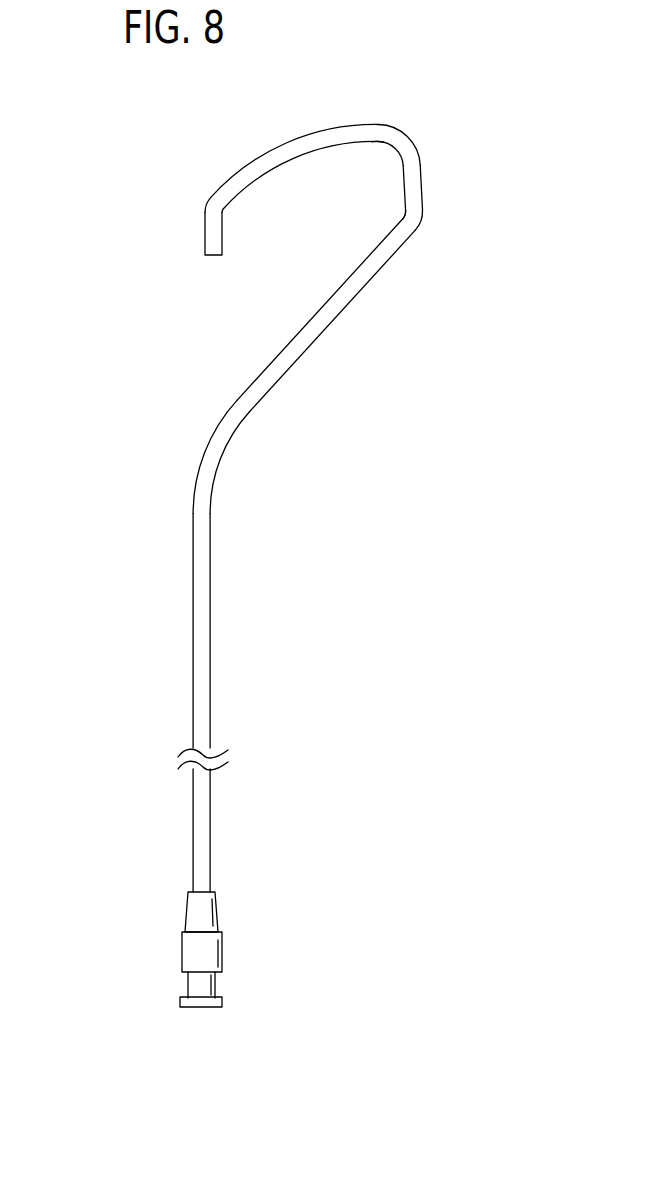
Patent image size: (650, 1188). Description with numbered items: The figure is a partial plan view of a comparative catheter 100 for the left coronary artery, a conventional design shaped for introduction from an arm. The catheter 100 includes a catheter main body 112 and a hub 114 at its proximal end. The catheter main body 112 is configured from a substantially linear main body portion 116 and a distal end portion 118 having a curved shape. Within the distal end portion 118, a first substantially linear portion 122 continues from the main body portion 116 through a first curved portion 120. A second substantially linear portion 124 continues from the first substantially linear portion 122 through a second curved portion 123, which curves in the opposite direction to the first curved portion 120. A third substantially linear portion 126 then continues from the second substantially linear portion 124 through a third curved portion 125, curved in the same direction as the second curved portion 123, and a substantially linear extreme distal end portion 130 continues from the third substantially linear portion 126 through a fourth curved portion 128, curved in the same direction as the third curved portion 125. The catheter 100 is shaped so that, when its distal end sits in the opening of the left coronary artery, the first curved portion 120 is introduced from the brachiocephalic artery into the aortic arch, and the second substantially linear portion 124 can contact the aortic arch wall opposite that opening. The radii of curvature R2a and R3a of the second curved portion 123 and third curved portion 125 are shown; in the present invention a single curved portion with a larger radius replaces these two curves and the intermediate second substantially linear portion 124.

The catheter for the left coronary artery 100 is at (402, 47).
The catheter main body 112 is at (233, 609).
The hub 114 is at (207, 918).
The main body portion 116 is at (107, 892).
The distal end portion 118 is at (107, 490).
The first curved portion 120 is at (206, 452).
The first substantially linear portion 122 is at (415, 247).
The second curved portion 123 is at (421, 221).
The second substantially linear portion 124 is at (404, 134).
The third curved portion 125 is at (391, 132).
The third substantially linear portion 126 is at (328, 118).
The fourth curved portion 128 is at (214, 201).
The extreme distal end portion 130 is at (196, 213).
The radius of curvature of the second curved portion R2a is at (392, 222).
The radius of curvature of the third curved portion R3a is at (378, 151).